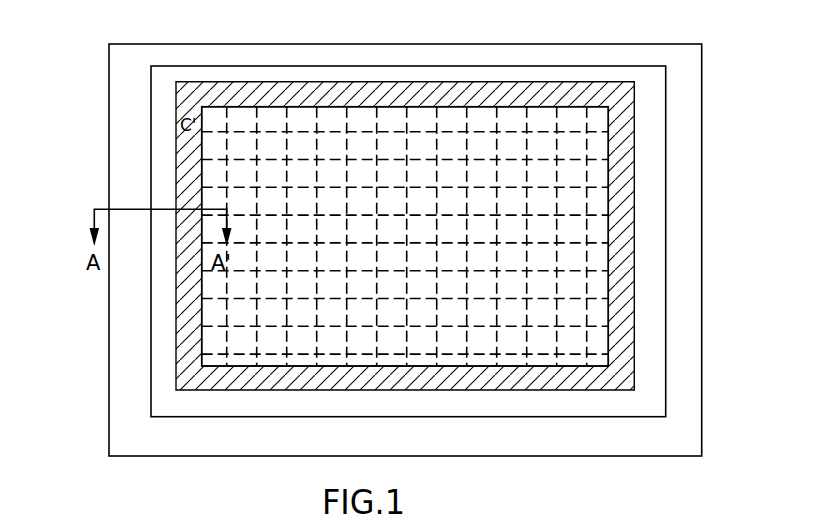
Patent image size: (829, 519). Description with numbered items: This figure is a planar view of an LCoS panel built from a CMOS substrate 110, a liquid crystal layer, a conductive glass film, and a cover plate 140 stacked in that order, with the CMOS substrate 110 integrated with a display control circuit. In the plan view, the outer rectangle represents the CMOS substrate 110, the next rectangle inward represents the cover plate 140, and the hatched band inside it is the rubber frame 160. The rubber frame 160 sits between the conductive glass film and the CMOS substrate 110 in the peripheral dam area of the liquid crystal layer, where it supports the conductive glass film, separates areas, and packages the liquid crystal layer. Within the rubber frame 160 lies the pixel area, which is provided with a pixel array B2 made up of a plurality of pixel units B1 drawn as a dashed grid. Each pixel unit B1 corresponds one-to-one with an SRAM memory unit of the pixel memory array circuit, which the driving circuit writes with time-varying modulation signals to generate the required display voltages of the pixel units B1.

The CMOS substrate 110 is at (122, 122).
The cover plate 140 is at (170, 79).
The rubber frame 160 is at (300, 97).
The pixel unit B1 is at (598, 147).
The pixel array B2 is at (607, 206).